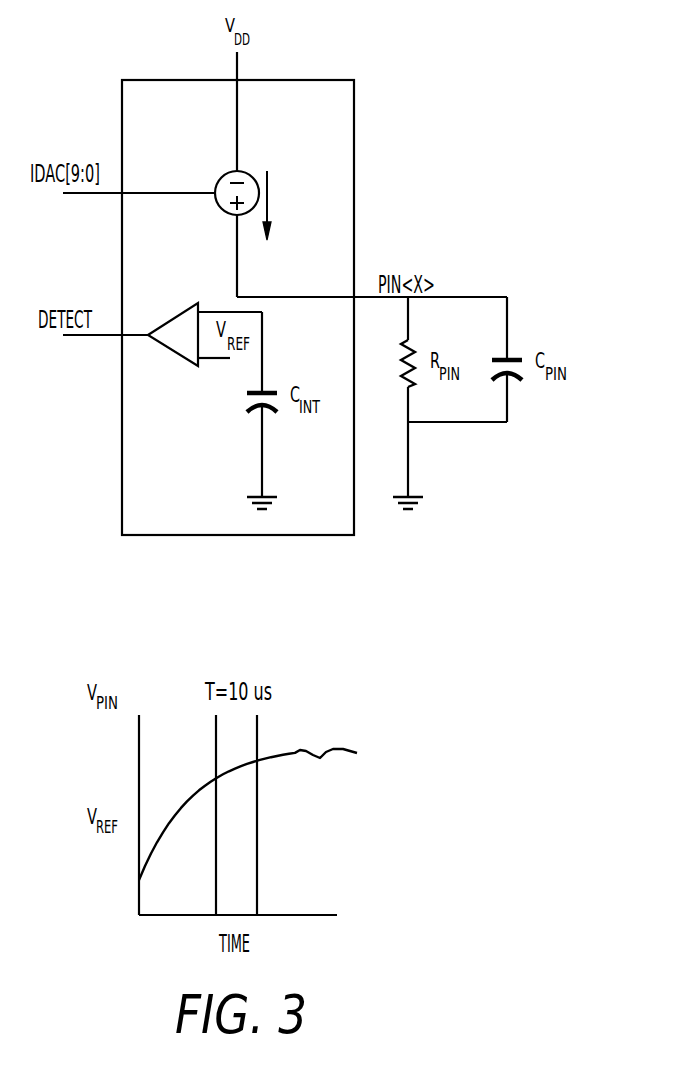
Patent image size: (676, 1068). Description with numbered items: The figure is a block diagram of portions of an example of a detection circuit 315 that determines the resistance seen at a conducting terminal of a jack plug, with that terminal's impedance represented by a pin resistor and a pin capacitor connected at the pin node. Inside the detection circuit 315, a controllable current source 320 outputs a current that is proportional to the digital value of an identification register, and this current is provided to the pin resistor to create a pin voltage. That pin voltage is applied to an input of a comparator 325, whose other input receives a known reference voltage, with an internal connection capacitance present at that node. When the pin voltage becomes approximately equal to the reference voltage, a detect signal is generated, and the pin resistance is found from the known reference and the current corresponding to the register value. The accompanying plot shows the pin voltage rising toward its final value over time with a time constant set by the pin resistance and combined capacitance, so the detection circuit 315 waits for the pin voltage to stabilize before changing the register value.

The detection circuit 315 is at (326, 80).
The controllable current source 320 is at (248, 171).
The comparator 325 is at (177, 315).